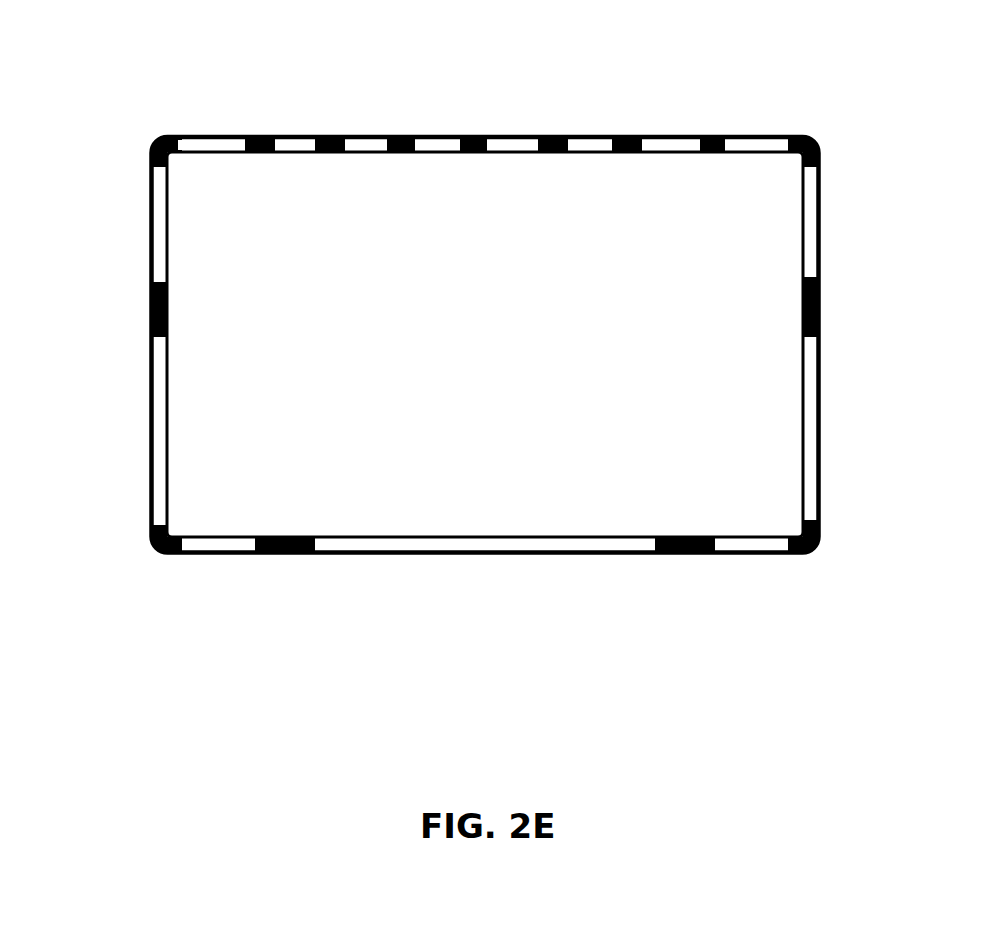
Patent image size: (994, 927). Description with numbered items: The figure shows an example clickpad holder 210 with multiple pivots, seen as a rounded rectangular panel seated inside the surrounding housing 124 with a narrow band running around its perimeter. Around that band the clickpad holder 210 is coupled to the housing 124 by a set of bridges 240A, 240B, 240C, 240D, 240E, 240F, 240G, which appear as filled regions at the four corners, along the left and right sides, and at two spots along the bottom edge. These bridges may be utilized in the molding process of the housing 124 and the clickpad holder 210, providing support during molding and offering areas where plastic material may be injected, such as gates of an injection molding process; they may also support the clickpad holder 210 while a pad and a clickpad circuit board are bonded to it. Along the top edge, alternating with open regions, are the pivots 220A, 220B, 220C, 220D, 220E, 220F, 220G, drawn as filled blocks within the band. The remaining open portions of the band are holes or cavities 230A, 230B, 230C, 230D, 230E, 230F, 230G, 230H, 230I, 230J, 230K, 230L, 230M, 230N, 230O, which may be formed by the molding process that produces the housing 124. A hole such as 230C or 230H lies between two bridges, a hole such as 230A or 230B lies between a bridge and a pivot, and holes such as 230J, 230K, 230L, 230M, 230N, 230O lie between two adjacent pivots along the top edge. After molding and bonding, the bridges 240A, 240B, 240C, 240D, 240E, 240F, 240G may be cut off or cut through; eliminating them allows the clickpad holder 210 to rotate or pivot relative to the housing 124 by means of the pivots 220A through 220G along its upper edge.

The housing 124 is at (155, 397).
The clickpad holder 210 is at (725, 378).
The pivot 220A is at (262, 147).
The pivot 220B is at (336, 147).
The pivot 220C is at (403, 147).
The pivot 220D is at (472, 147).
The pivot 220E is at (558, 147).
The pivot 220F is at (635, 147).
The pivot 220G is at (717, 147).
The hole 230A is at (208, 148).
The hole 230B is at (782, 148).
The hole 230C is at (807, 237).
The hole 230D is at (808, 440).
The hole 230E is at (754, 553).
The hole 230F is at (520, 553).
The hole 230G is at (226, 552).
The hole 230H is at (158, 430).
The hole 230I is at (160, 228).
The hole 230J is at (300, 152).
The hole 230K is at (378, 152).
The hole 230L is at (447, 152).
The hole 230M is at (520, 152).
The hole 230N is at (593, 152).
The hole 230O is at (683, 152).
The bridge 240A is at (156, 146).
The bridge 240B is at (820, 150).
The bridge 240C is at (807, 297).
The bridge 240D is at (793, 553).
The bridge 240E is at (280, 553).
The bridge 240F is at (153, 528).
The bridge 240G is at (160, 307).